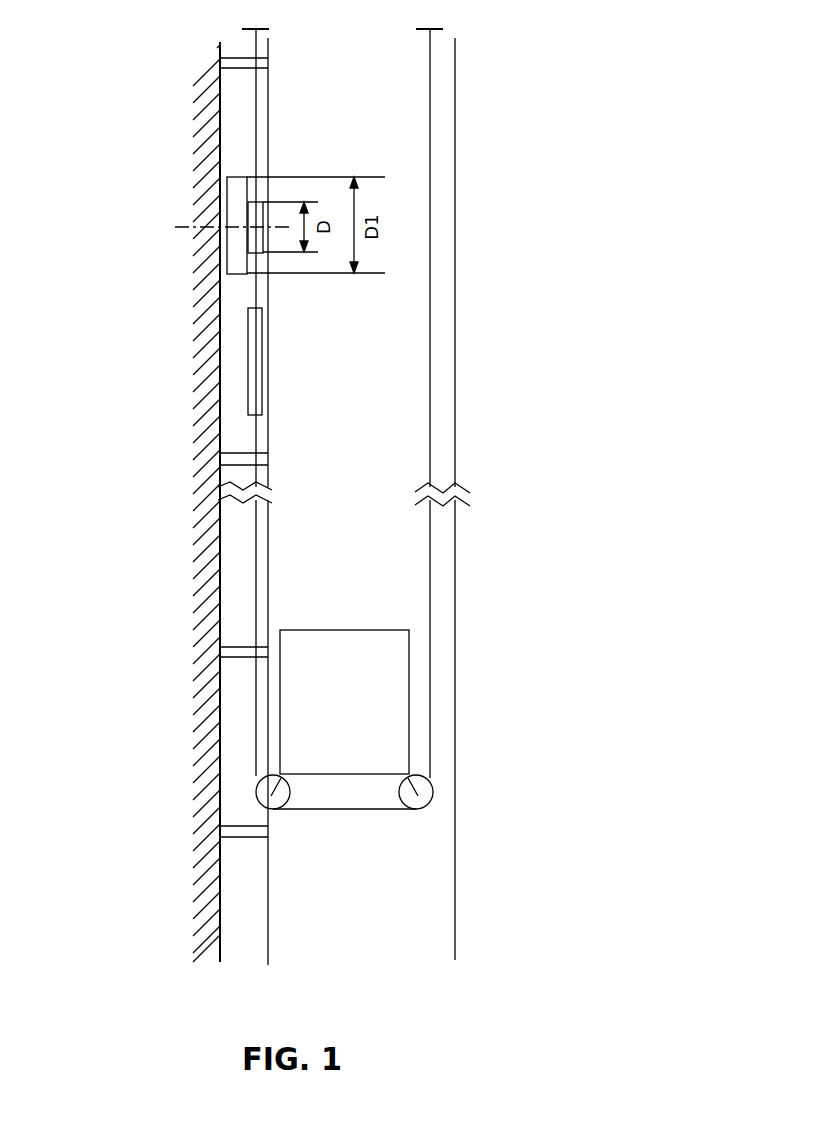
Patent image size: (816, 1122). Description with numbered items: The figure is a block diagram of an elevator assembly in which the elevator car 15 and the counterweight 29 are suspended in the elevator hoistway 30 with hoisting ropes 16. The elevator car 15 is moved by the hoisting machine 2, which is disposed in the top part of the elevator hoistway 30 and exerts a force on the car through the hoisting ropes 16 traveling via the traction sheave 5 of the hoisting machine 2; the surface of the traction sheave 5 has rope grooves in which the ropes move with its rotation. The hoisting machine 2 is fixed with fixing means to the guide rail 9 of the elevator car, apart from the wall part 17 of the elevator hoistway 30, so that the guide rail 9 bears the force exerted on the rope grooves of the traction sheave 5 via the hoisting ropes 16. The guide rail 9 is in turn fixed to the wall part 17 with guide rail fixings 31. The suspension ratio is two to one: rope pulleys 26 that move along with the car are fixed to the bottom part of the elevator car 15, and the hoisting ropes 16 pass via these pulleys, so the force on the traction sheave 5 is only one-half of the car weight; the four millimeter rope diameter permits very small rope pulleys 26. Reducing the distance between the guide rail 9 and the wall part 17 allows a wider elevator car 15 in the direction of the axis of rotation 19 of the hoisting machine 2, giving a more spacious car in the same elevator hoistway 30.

The hoisting machine 2 is at (230, 202).
The traction sheave 5 is at (262, 202).
The guide rail 9 is at (268, 106).
The elevator car 15 is at (359, 715).
The hoisting ropes 16 is at (256, 584).
The wall part of the elevator hoistway 17 is at (220, 390).
The axis of rotation 19 is at (187, 228).
The rope pulleys 26 is at (272, 809).
The counterweight 29 is at (268, 364).
The elevator hoistway 30 is at (358, 560).
The guide rail fixings 31 is at (240, 659).